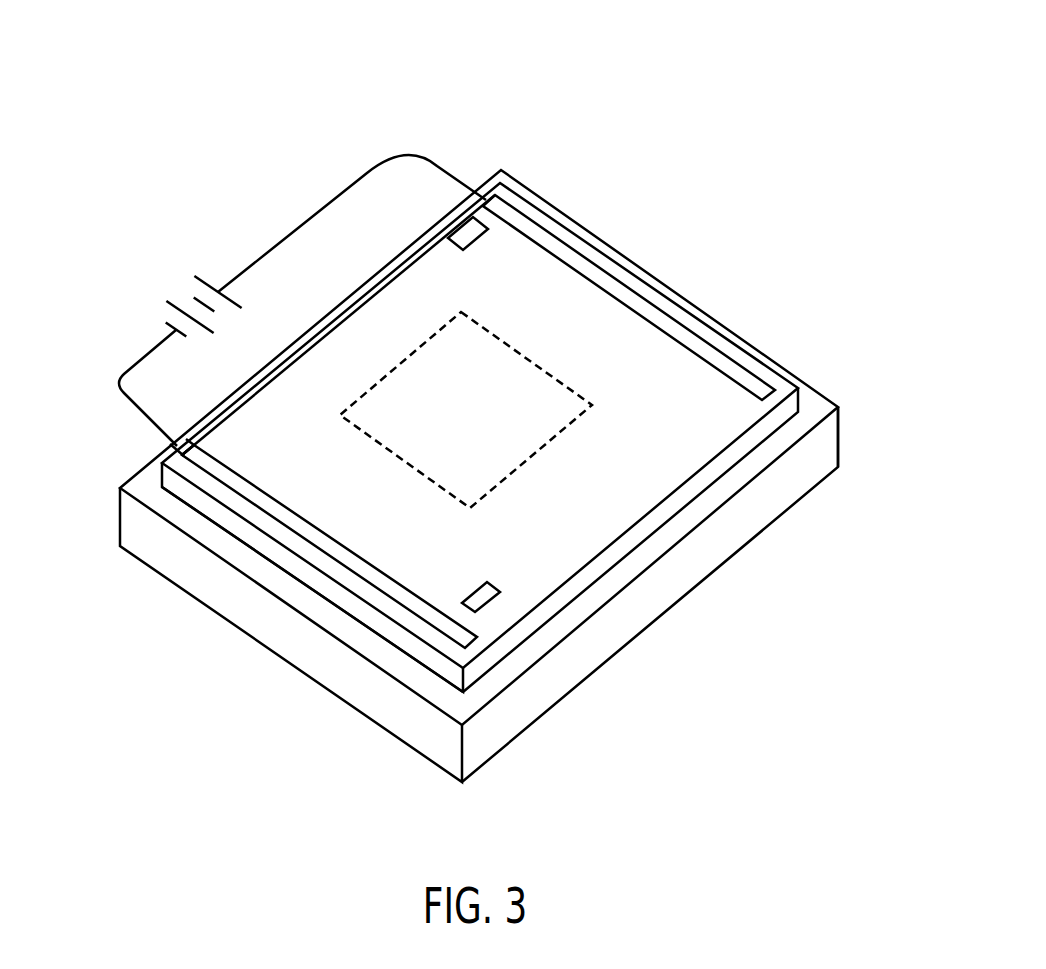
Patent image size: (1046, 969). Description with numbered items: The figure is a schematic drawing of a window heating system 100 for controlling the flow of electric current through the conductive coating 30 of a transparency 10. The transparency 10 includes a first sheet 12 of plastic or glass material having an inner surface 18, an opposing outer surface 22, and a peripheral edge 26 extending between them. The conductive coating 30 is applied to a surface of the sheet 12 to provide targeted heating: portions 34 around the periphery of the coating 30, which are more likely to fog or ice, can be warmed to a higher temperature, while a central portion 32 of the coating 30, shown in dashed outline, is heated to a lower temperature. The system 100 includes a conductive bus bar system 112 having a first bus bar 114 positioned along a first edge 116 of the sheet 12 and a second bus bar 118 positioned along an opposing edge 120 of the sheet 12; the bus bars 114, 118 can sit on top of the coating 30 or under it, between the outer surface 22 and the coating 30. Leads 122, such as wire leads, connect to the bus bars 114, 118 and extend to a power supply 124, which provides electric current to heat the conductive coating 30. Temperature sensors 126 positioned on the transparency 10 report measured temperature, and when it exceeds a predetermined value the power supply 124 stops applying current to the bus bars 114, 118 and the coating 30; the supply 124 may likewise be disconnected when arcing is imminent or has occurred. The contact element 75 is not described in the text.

The window heating system 100 is at (459, 401).
The transparency 10 is at (479, 483).
The first sheet 12 is at (507, 483).
The inner surface 18 is at (650, 594).
The outer surface 22 is at (291, 642).
The peripheral edge 26 is at (866, 437).
The conductive coating 30 is at (466, 406).
The central portion 32 is at (466, 406).
The peripheral portions 34 is at (431, 435).
The contact pad 75 is at (184, 417).
The conductive bus bar system 112 is at (128, 436).
The first bus bar 114 is at (329, 542).
The first edge 116 is at (263, 589).
The second bus bar 118 is at (629, 289).
The opposing edge 120 is at (424, 325).
The leads 122 is at (255, 275).
The power supply 124 is at (175, 272).
The temperature sensors 126 is at (523, 414).